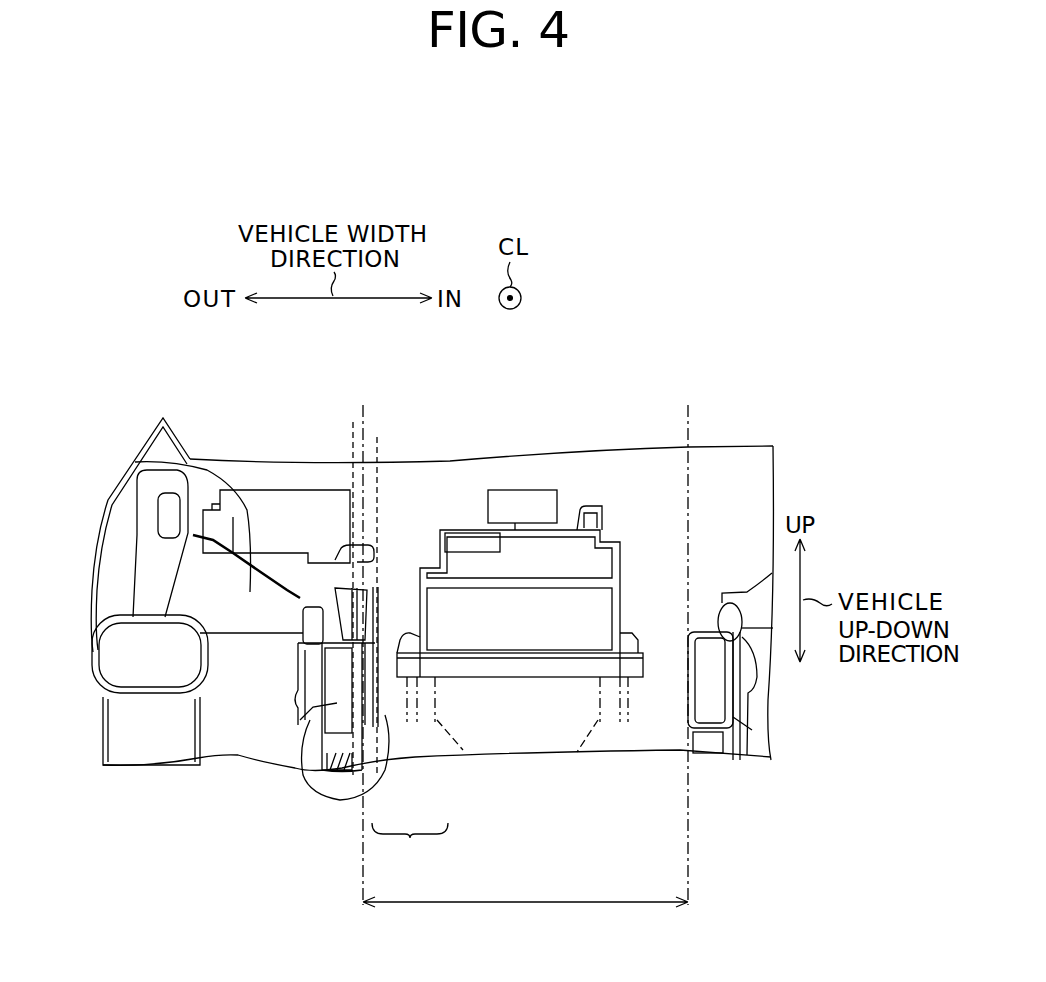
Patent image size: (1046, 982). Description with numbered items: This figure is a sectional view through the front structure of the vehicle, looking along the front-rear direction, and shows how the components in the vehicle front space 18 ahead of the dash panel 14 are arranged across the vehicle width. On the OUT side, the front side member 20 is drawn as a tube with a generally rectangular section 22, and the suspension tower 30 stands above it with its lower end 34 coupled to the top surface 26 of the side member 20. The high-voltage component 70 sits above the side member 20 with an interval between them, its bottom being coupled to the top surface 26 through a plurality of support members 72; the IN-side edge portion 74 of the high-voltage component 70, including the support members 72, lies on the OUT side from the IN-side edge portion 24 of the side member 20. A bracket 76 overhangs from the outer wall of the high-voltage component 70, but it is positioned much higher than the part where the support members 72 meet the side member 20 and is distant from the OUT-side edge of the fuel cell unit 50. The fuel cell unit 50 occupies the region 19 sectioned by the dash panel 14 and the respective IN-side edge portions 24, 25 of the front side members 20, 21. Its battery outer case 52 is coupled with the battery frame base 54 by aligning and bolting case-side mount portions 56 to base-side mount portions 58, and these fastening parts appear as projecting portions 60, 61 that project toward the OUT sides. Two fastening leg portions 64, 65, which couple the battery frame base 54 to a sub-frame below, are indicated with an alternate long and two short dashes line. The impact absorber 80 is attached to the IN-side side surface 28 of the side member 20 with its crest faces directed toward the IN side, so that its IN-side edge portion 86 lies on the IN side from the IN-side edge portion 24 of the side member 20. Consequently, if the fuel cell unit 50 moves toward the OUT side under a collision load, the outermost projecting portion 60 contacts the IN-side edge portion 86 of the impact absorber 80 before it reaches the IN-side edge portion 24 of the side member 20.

The dash panel 14 is at (733, 471).
The vehicle front space 18 is at (672, 583).
The region 19 is at (530, 903).
The front side member 20 is at (300, 698).
The front side member 21 is at (745, 760).
The generally rectangular section 22 is at (303, 725).
The IN-side edge portion 24 is at (366, 419).
The IN-side edge portion 25 is at (681, 404).
The top surface 26 is at (310, 577).
The IN-side side surface 28 is at (387, 770).
The suspension tower 30 is at (168, 584).
The lower end 34 is at (313, 623).
The fuel cell unit 50 is at (574, 524).
The battery outer case 52 is at (543, 622).
The battery frame base 54 is at (496, 668).
The case-side mount portion 56 is at (400, 760).
The base-side mount portion 58 is at (413, 760).
The projecting portion 60 is at (410, 849).
The projecting portion 61 is at (628, 655).
The fastening leg portion 64 is at (465, 752).
The fastening leg portion 65 is at (578, 752).
The high-voltage component 70 is at (142, 460).
The support member 72 is at (340, 586).
The IN-side edge portion 74 is at (350, 419).
The bracket 76 is at (372, 551).
The impact absorber 80 is at (375, 660).
The IN-side edge portion 86 is at (389, 453).